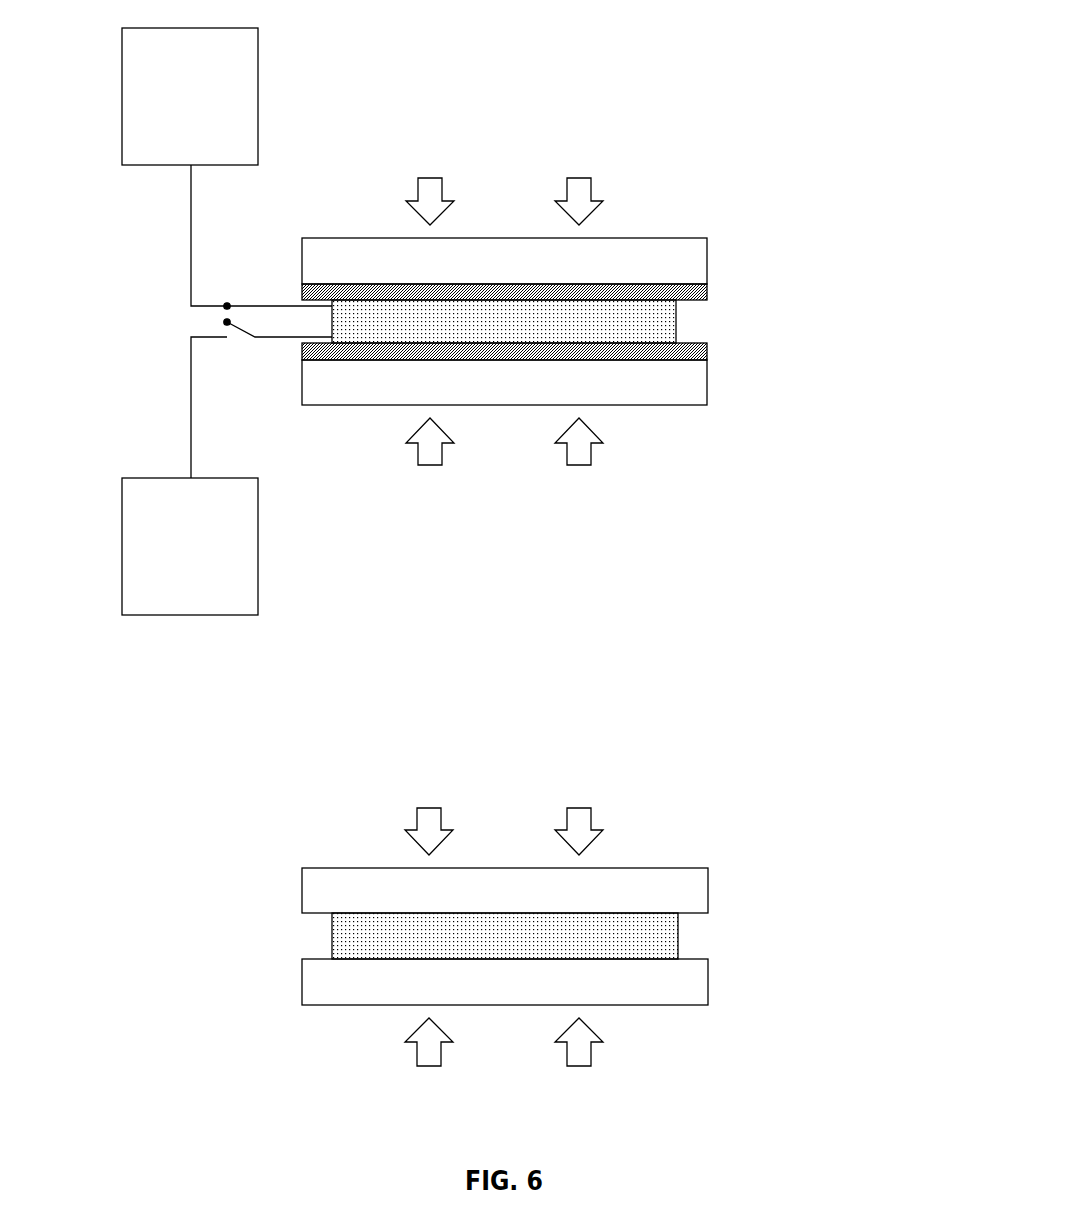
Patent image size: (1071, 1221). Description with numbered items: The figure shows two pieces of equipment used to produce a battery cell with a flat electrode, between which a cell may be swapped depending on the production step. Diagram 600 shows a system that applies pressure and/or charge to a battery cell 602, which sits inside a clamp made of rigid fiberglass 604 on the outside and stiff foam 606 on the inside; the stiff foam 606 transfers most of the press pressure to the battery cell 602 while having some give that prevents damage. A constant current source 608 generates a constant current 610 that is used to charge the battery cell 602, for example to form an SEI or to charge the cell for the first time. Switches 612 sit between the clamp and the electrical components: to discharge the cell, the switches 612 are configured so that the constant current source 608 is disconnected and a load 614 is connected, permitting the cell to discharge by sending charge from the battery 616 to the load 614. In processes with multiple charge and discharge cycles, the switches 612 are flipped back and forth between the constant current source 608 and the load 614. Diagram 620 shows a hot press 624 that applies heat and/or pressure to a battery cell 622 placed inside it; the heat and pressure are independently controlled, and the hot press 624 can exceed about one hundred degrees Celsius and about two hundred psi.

The diagram 600 is at (612, 238).
The battery cell 602 is at (655, 313).
The rigid fiberglass 604 is at (708, 262).
The stiff foam 606 is at (709, 292).
The constant current source 608 is at (122, 96).
The constant current 610 is at (191, 217).
The switches 612 is at (244, 284).
The load 614 is at (122, 547).
The charge from the battery 616 is at (191, 412).
The diagram 620 is at (509, 904).
The battery cell 622 is at (679, 938).
The hot press 624 is at (302, 980).